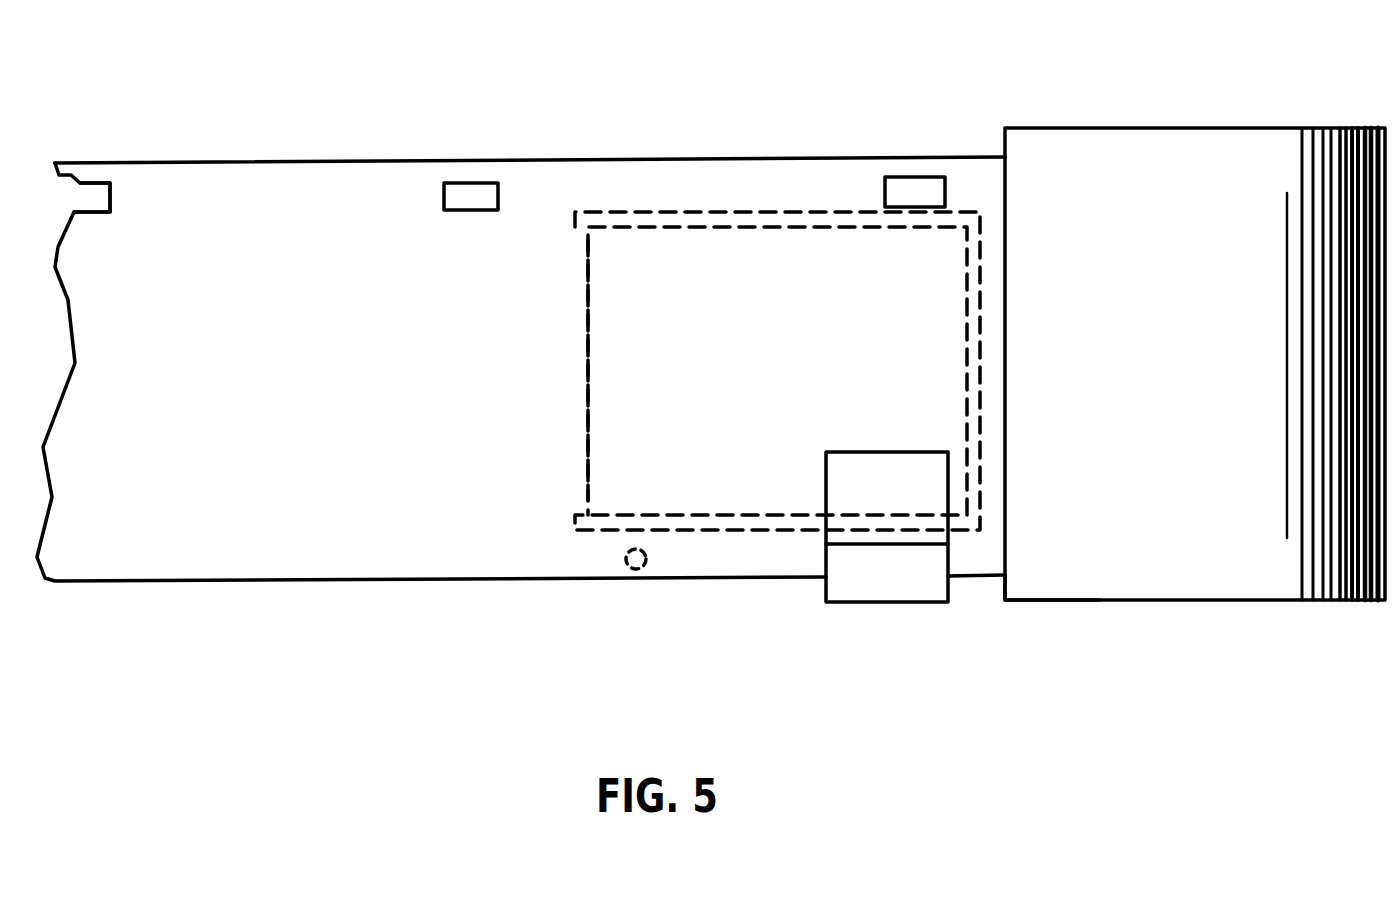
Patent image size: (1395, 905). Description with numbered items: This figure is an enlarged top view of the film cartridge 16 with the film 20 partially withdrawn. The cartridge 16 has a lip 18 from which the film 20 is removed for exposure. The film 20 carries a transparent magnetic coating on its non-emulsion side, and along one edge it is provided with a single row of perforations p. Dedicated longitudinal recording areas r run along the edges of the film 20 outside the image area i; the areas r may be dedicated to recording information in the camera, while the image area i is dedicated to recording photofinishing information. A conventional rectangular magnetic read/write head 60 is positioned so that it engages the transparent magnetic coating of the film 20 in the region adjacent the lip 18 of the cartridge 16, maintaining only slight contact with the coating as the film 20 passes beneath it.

The film cartridge 16 is at (1125, 128).
The lip 18 is at (1032, 604).
The film 20 is at (305, 188).
The magnetic read/write head 60 is at (872, 602).
The perforations p is at (80, 183).
The longitudinal recording areas r is at (695, 210).
The image area i is at (588, 345).